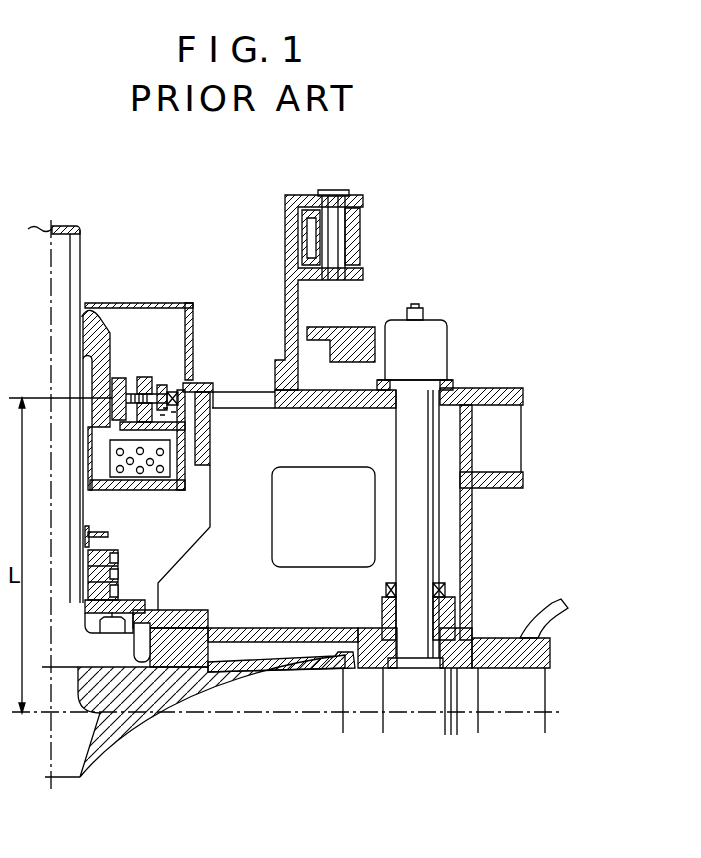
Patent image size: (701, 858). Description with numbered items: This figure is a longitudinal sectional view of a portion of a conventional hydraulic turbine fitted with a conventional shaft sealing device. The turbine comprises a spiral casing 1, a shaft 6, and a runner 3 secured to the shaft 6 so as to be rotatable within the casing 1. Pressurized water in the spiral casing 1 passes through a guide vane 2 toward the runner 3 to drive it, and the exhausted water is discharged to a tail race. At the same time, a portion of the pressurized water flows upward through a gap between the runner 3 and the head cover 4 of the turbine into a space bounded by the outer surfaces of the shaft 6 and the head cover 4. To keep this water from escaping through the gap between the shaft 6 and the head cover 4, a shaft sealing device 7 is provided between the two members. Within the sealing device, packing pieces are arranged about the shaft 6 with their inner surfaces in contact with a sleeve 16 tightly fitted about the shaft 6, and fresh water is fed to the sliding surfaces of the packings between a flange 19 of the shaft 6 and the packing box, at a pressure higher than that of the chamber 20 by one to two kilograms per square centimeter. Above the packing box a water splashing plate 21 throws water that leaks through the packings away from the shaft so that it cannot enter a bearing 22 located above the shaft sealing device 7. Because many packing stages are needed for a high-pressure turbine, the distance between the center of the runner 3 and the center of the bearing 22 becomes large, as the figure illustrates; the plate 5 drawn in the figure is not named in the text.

The spiral casing 1 is at (562, 614).
The guide vane 2 is at (448, 690).
The runner 3 is at (183, 689).
The head cover 4 is at (180, 612).
The plate 5 is at (286, 656).
The shaft 6 is at (70, 250).
The shaft sealing device 7 is at (118, 558).
The sleeve 16 is at (90, 546).
The flange 19 is at (142, 667).
The chamber 20 is at (100, 638).
The water splashing plate 21 is at (98, 532).
The bearing 22 is at (178, 398).